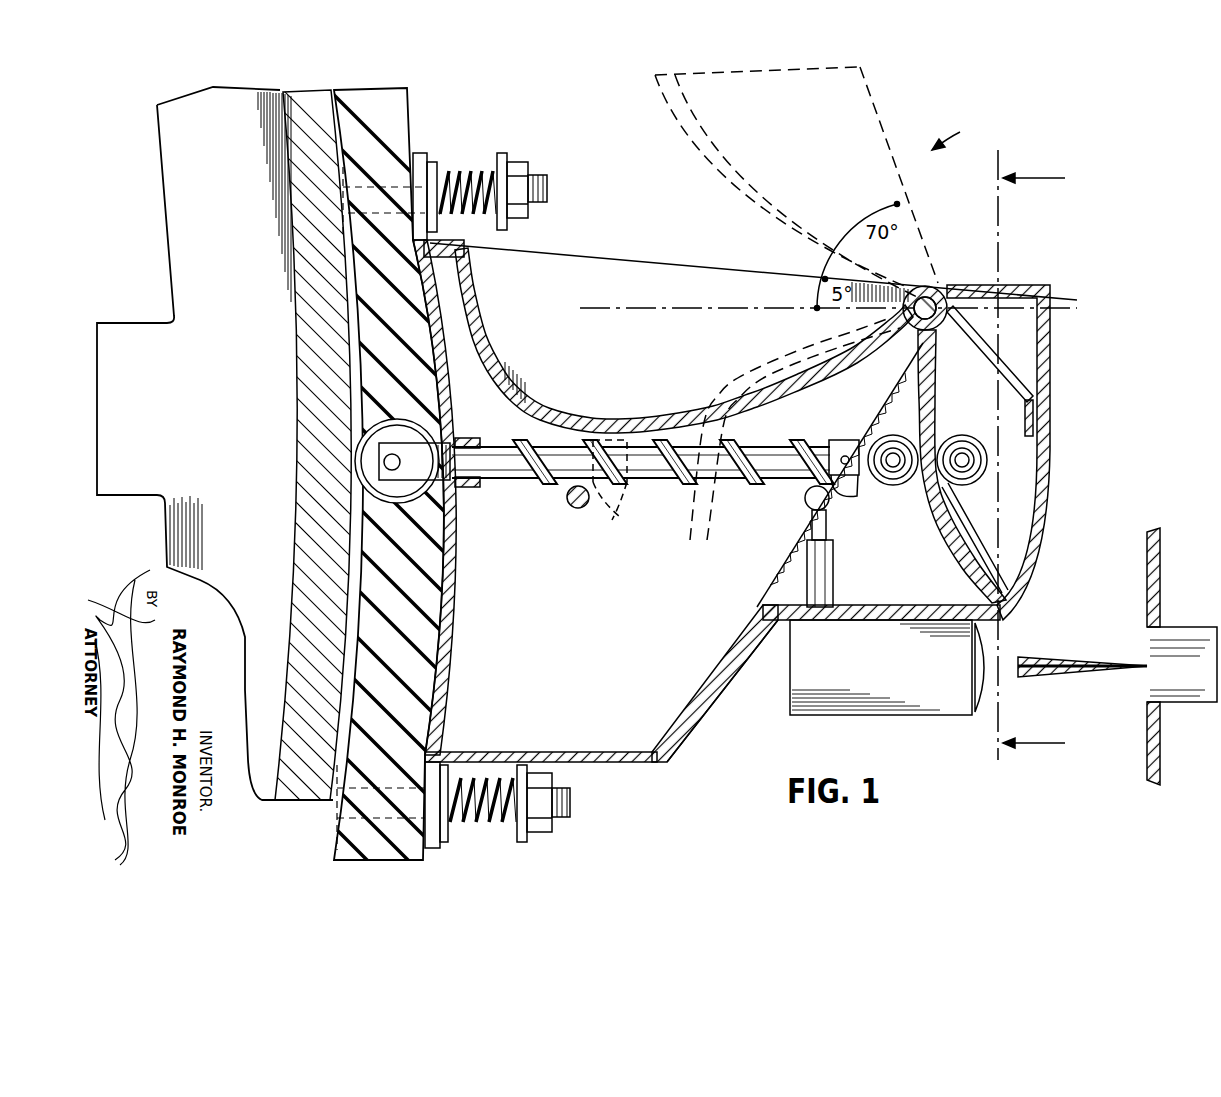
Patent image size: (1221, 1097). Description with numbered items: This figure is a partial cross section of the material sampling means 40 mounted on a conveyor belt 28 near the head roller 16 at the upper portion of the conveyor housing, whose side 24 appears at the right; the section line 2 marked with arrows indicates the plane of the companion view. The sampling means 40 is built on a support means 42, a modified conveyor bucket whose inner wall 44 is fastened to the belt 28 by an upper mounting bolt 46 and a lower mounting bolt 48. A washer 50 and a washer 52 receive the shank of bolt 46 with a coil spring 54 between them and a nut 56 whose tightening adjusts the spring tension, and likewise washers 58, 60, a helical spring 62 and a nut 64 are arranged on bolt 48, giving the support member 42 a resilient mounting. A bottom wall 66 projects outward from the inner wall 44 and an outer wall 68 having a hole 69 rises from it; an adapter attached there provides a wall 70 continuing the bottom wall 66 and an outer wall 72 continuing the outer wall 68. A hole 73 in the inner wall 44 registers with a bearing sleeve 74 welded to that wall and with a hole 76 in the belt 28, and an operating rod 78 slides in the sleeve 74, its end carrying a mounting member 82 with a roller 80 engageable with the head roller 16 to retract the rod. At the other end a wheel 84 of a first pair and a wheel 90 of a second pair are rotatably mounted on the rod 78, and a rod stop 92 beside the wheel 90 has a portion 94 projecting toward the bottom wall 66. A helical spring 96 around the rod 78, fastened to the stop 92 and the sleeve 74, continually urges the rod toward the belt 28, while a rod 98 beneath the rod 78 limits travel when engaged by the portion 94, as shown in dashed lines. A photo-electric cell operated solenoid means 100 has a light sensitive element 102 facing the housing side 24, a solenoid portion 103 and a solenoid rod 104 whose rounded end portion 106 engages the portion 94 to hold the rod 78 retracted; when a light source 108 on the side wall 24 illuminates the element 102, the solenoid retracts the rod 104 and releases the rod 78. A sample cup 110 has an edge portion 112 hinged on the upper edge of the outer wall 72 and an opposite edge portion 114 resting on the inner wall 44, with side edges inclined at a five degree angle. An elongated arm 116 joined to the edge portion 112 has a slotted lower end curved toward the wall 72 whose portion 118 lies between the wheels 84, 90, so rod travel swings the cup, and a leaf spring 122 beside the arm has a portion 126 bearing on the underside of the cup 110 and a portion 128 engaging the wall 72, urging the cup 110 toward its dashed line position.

The section line 2- 2 is at (1038, 455).
The head roller 16 is at (168, 280).
The side of the conveyor housing 24 is at (1147, 582).
The belt 28 is at (400, 100).
The sample means 40 is at (956, 132).
The cup support member 42 is at (692, 730).
The inner wall 44 is at (457, 600).
The mounting bolt 46 is at (548, 188).
The mounting bolt 48 is at (572, 802).
The washer 50 is at (431, 170).
The washer 52 is at (501, 155).
The coil spring 54 is at (468, 178).
The nut 56 is at (517, 170).
The washer 58 is at (443, 835).
The washer 60 is at (527, 838).
The helical spring 62 is at (485, 808).
The nut 64 is at (548, 826).
The bottom wall 66 is at (635, 762).
The outer wall 68 is at (728, 650).
The hole 69 is at (785, 565).
The wall 70 is at (965, 605).
The outer wall 72 is at (1050, 470).
The hole 73 is at (470, 450).
The bearing sleeve 74 is at (472, 486).
The hole 76 is at (470, 440).
The operating rod 78 is at (705, 472).
The roller 80 is at (355, 462).
The mounting member 82 is at (414, 461).
The wheel 84 is at (968, 485).
The wheel 90 is at (895, 485).
The rod stop 92 is at (610, 438).
The portion of the rod stop 94 is at (623, 495).
The helical spring 96 is at (663, 474).
The rod 98 is at (572, 503).
The photo-electric cell operated solenoid means 100 is at (885, 712).
The light sensitive element 102 is at (990, 680).
The solenoid portion 103 is at (833, 568).
The solenoid rod 104 is at (812, 514).
The rounded end portion 106 is at (805, 498).
The light source 108 is at (1158, 686).
The sample cup 110 is at (735, 172).
The edge portion 112 is at (932, 290).
The edge portion 114 is at (450, 244).
The arm 116 is at (773, 360).
The portion of the arm 118 is at (960, 555).
The leaf spring 122 is at (985, 350).
The portion of the leaf spring 126 is at (810, 392).
The portion of the leaf spring 128 is at (1033, 402).